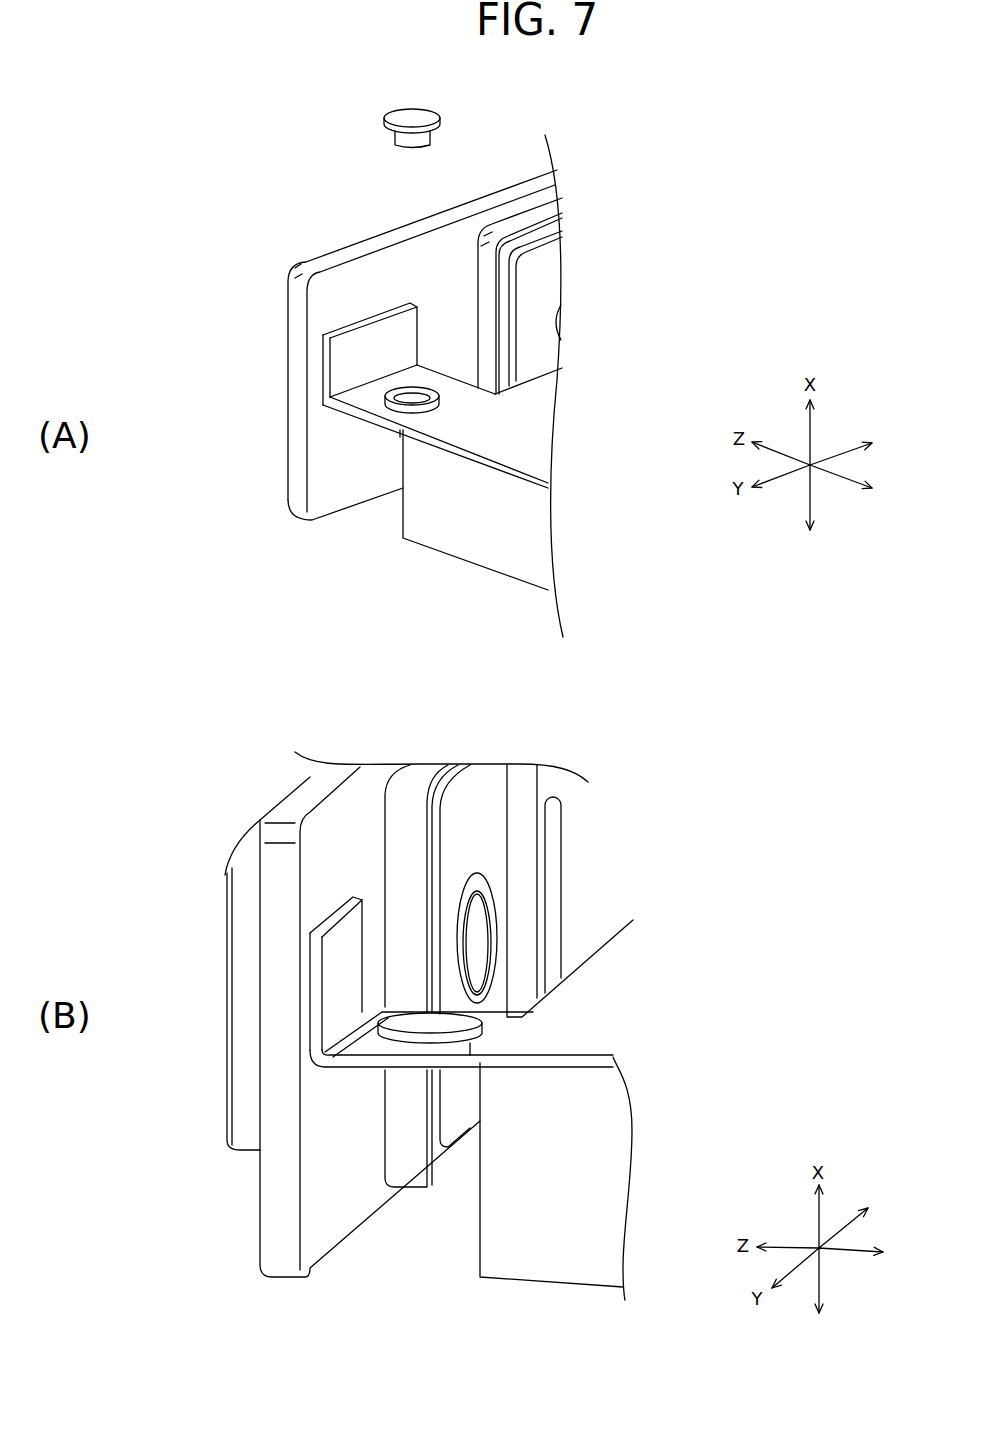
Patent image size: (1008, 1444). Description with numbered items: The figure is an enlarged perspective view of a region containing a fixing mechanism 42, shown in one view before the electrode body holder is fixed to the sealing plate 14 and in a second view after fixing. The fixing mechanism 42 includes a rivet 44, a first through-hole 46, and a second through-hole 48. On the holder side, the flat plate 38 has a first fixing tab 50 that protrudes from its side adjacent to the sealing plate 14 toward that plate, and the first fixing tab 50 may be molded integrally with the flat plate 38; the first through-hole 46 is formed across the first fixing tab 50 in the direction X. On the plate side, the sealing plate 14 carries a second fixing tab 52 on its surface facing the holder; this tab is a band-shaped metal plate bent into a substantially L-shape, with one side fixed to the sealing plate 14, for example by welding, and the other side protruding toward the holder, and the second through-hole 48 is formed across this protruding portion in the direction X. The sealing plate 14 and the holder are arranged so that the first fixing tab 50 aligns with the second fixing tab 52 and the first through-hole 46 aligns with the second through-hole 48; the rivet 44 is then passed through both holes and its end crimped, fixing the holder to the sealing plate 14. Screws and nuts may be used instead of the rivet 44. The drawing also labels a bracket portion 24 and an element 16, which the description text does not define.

The sealing plate 14 is at (288, 301).
The front panel 16 is at (233, 1110).
The bracket (second bracket portion 24b) 24 is at (463, 563).
The flat plate 38 is at (530, 430).
The fixing mechanism 42 is at (462, 1100).
The rivet 44 is at (414, 115).
The first through-hole 46 is at (418, 393).
The second through-hole 48 is at (400, 412).
The first fixing tab 50 is at (453, 372).
The second fixing tab 52 is at (357, 419).